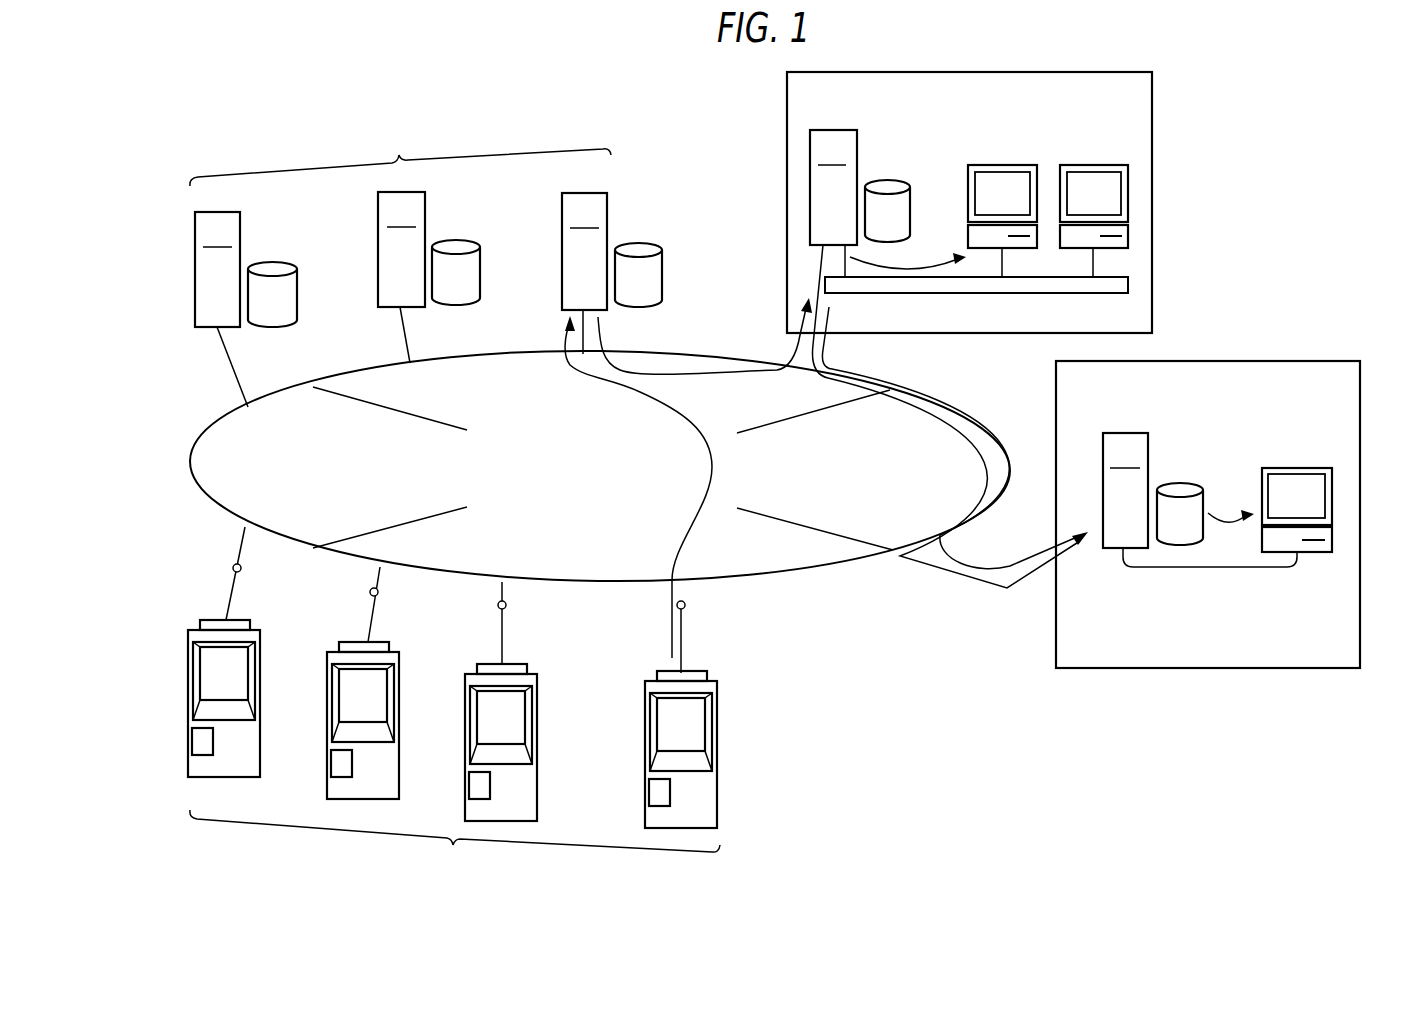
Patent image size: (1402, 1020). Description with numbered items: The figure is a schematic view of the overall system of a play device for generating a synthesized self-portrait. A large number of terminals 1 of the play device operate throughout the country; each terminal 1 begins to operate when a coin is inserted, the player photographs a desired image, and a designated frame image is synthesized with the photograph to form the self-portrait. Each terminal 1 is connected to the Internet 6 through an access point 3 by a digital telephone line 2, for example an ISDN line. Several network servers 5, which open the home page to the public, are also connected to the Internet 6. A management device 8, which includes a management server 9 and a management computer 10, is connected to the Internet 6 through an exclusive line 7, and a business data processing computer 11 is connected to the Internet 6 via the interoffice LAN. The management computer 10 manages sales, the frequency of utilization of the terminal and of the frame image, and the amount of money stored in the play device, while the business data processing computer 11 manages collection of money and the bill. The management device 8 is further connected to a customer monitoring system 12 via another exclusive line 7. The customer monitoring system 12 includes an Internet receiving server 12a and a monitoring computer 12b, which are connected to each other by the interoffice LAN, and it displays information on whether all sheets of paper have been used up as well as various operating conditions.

The terminal 1 is at (261, 752).
The digital telephone line 2 is at (684, 650).
The access point 3 is at (686, 605).
The network server 5 is at (195, 282).
The Internet 6 is at (614, 509).
The exclusive line 7 is at (603, 323).
The management device 8 is at (787, 114).
The management server 9 is at (828, 130).
The management computer 10 is at (1001, 163).
The business data processing computer 11 is at (1098, 163).
The customer monitoring system 12 is at (1137, 637).
The Internet receiving server 12a is at (1125, 430).
The monitoring computer 12b is at (1297, 467).